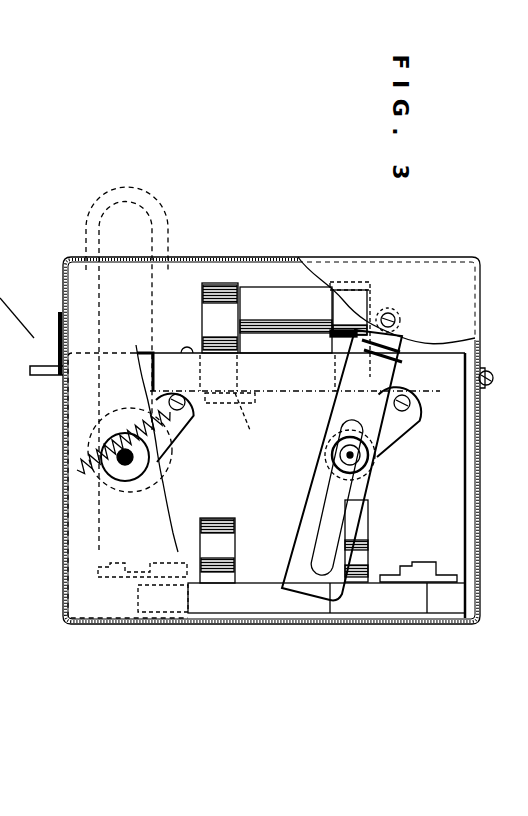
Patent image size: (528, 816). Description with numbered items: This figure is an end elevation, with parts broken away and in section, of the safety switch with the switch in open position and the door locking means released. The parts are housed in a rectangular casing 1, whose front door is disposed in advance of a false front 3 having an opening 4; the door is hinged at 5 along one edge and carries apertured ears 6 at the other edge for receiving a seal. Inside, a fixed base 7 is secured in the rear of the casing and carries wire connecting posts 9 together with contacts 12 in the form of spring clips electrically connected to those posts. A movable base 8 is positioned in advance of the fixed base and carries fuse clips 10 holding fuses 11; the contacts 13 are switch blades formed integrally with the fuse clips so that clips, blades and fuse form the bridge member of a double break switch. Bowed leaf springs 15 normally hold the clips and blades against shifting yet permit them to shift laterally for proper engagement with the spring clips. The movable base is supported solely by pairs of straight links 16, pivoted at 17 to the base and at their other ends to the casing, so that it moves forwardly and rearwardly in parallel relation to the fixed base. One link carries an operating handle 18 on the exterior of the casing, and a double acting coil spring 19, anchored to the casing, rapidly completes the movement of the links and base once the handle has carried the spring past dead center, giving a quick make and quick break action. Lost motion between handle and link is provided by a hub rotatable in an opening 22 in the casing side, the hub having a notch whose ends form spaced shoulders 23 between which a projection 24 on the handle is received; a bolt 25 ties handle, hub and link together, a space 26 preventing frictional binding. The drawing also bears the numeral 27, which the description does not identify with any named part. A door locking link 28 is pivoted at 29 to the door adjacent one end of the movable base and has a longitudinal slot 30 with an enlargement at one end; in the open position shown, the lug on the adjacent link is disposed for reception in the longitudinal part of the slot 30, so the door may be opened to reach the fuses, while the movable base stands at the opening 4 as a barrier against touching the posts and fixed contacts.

The casing 1 is at (252, 598).
The false front 3 is at (449, 263).
The opening 4 is at (174, 350).
The hinge 5 is at (490, 384).
The apertured ears 6 is at (397, 566).
The fixed base 7 is at (135, 345).
The movable base 8 is at (312, 367).
The wire connecting posts 9 is at (45, 379).
The fuse clips 10 is at (346, 318).
The fuses 11 is at (275, 298).
The contacts 12 is at (230, 540).
The contacts 13 is at (230, 433).
The springs 15 is at (252, 417).
The links 16 is at (402, 430).
The pivot 17 is at (410, 408).
The operating handle 18 is at (105, 278).
The double acting coil spring 19 is at (105, 478).
The opening 22 is at (128, 483).
The shoulders 23 is at (95, 452).
The projection 24 is at (331, 457).
The bolt 25 is at (103, 437).
The space 26 is at (362, 442).
The arm 27 is at (122, 425).
The link 28 is at (352, 503).
The pivot 29 is at (394, 315).
The longitudinal slot 30 is at (322, 565).